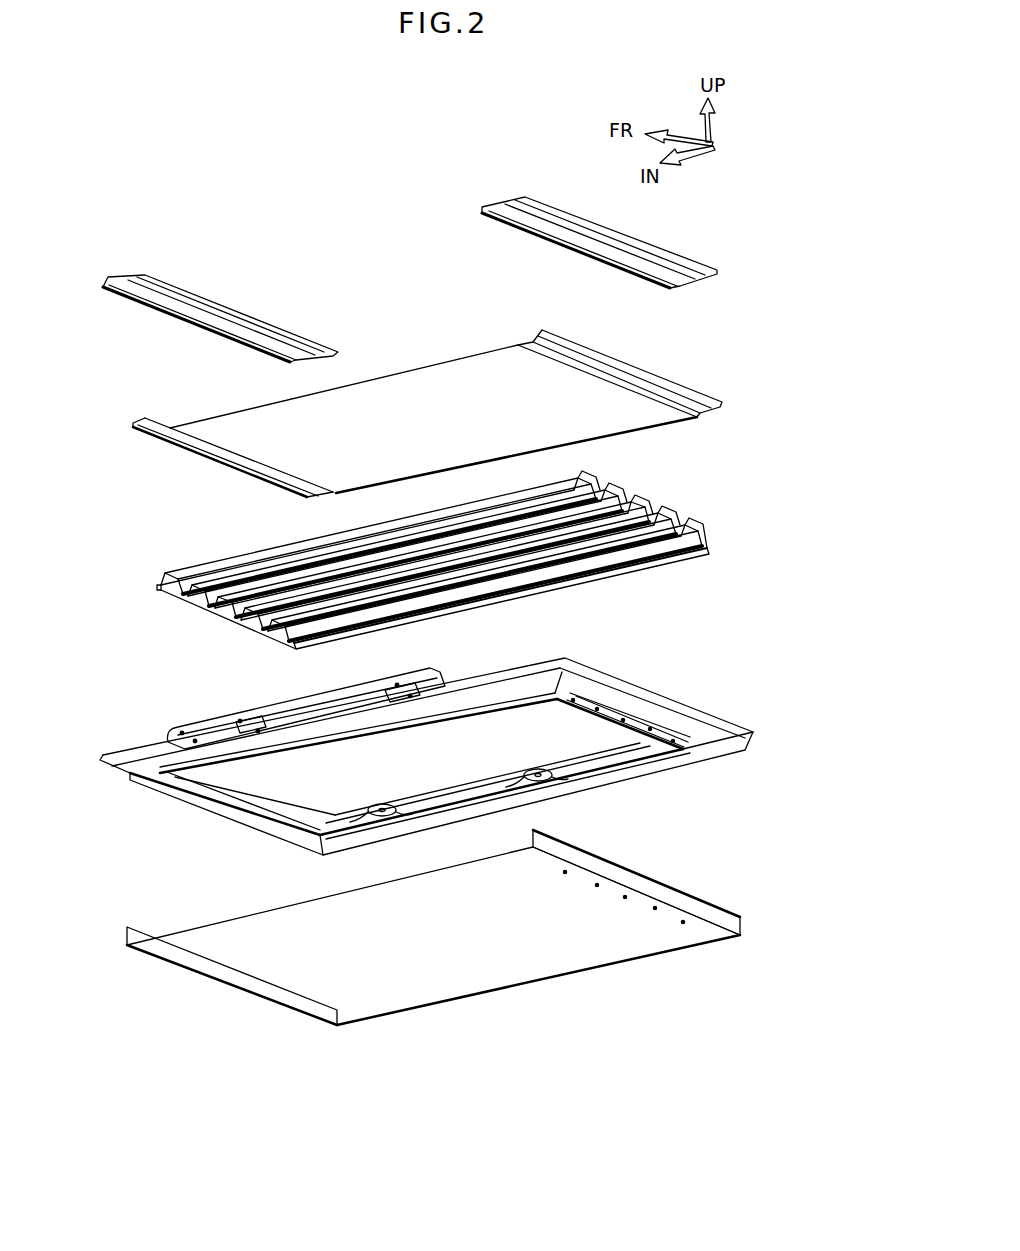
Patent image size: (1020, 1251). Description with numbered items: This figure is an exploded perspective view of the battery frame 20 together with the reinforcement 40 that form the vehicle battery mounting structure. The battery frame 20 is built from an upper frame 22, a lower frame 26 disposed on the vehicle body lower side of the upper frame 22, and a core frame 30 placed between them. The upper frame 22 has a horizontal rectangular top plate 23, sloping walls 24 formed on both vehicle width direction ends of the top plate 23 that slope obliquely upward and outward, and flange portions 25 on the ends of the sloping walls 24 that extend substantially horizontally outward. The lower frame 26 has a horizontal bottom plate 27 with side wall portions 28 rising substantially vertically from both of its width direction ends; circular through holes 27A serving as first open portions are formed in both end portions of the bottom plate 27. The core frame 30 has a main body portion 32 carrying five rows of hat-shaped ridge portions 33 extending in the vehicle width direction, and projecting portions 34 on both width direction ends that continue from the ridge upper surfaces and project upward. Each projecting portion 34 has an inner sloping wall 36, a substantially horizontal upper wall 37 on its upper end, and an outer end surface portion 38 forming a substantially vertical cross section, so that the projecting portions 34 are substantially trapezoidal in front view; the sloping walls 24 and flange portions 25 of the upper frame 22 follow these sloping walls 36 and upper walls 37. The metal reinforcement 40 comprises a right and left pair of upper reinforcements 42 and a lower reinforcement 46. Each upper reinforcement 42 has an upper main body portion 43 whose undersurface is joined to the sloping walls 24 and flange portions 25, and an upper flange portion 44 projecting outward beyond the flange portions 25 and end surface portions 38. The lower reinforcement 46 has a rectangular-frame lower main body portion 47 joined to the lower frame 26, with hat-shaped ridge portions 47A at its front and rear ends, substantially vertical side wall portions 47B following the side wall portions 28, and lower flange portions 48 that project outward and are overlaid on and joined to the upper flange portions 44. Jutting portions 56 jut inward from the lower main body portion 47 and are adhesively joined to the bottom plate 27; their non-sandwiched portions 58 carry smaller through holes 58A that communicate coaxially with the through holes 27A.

The battery frame 20 is at (165, 237).
The upper frame 22 is at (690, 387).
The top plate 23 is at (430, 392).
The sloping walls 24 is at (534, 343).
The flange portions 25 is at (605, 355).
The lower frame 26 is at (705, 895).
The bottom plate 27 is at (478, 965).
The through holes 27A is at (685, 925).
The side wall portions 28 is at (618, 870).
The core frame 30 is at (700, 520).
The main body portion 32 is at (553, 585).
The ridge portions 33 is at (272, 557).
The projecting portions 34 is at (688, 545).
The sloping walls 36 is at (668, 505).
The upper walls 37 is at (600, 490).
The end surface portions 38 is at (180, 595).
The reinforcement 40 is at (437, 511).
The upper reinforcements 42 is at (148, 307).
The upper main body portions 43 is at (205, 295).
The upper flange portions 44 is at (215, 330).
The lower reinforcement 46 is at (683, 697).
The lower main body portion 47 is at (670, 787).
The ridge portions 47A is at (347, 720).
The side wall portions 47B is at (635, 700).
The lower flange portions 48 is at (590, 667).
The jutting portions 56 is at (608, 723).
The non-sandwiched portions 58 is at (653, 737).
The through holes 58A is at (593, 715).